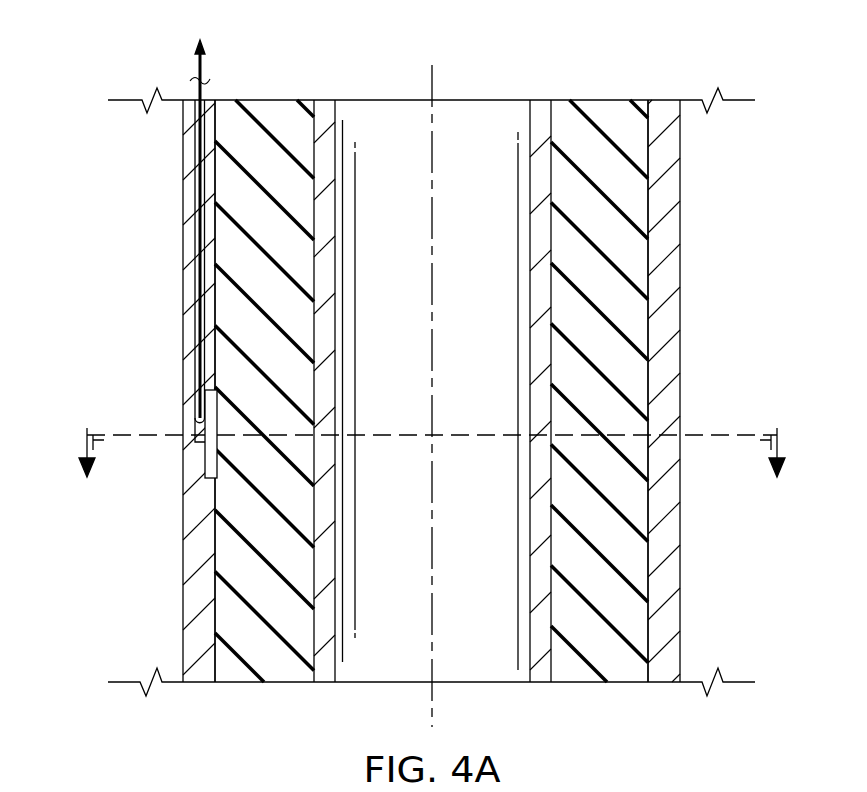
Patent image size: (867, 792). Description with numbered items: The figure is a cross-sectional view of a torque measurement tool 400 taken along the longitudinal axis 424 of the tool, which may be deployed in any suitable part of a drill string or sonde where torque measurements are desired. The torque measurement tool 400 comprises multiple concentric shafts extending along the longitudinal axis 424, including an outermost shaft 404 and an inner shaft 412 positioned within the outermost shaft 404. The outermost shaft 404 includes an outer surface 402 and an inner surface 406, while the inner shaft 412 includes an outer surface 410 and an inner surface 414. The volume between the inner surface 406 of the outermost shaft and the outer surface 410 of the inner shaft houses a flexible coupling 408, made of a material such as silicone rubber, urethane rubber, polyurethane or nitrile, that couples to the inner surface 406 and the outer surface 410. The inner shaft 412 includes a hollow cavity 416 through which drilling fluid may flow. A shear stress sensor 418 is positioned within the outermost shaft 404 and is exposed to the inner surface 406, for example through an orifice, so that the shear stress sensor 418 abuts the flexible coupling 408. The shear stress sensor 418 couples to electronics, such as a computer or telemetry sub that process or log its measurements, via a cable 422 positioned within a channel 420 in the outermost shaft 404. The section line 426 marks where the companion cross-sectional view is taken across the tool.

The torque measurement tool 400 is at (108, 78).
The outer surface 402 is at (683, 230).
The outermost shaft 404 is at (672, 277).
The inner surface 406 is at (648, 335).
The flexible coupling 408 is at (602, 108).
The outer surface 410 is at (550, 462).
The inner shaft 412 is at (538, 527).
The inner surface 414 is at (530, 582).
The hollow cavity 416 is at (482, 108).
The shear stress sensor 418 is at (205, 455).
The channel 420 is at (195, 435).
The cable 422 is at (187, 382).
The longitudinal axis 424 is at (433, 700).
The section line 4B-4B 426 is at (700, 432).